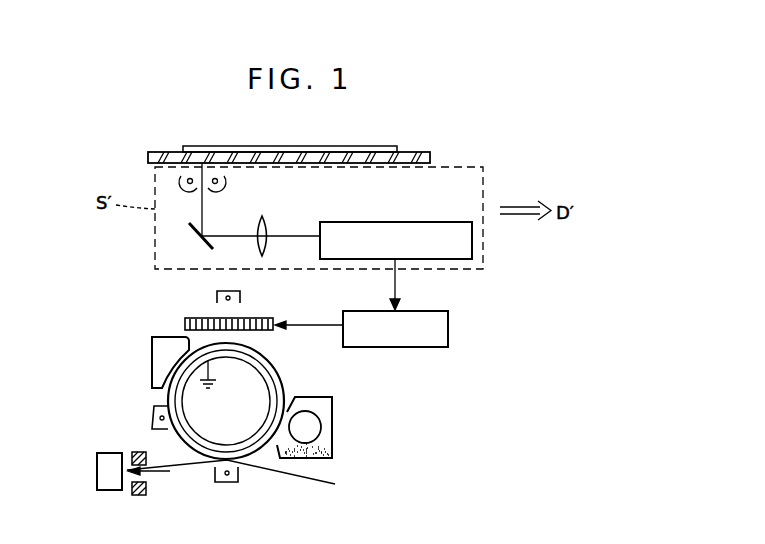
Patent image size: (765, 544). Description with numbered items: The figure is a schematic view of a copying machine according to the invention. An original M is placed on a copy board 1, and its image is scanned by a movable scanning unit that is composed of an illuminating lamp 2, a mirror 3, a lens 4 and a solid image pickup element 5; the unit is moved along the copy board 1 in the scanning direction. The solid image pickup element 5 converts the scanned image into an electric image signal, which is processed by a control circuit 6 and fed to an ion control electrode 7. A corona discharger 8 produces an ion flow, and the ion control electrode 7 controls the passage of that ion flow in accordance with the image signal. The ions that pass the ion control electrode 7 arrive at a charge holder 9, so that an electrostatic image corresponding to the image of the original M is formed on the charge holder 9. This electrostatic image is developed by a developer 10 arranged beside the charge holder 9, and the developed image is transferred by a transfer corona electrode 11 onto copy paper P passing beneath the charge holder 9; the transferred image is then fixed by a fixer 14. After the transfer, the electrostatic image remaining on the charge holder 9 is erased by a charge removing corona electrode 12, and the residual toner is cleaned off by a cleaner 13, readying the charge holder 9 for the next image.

The copy board 1 is at (412, 152).
The illuminating lamp 2 is at (187, 191).
The mirror 3 is at (195, 234).
The lens 4 is at (267, 228).
The solid image pickup element 5 is at (431, 222).
The control circuit 6 is at (451, 328).
The ion control electrode 7 is at (184, 322).
The corona discharger 8 is at (215, 295).
The charge holder 9 is at (267, 380).
The developer 10 is at (333, 423).
The transfer corona electrode 11 is at (227, 483).
The charge removing corona electrode 12 is at (152, 418).
The cleaner 13 is at (152, 357).
The fixer 14 is at (96, 471).
The original M is at (385, 146).
The copy paper P is at (304, 478).